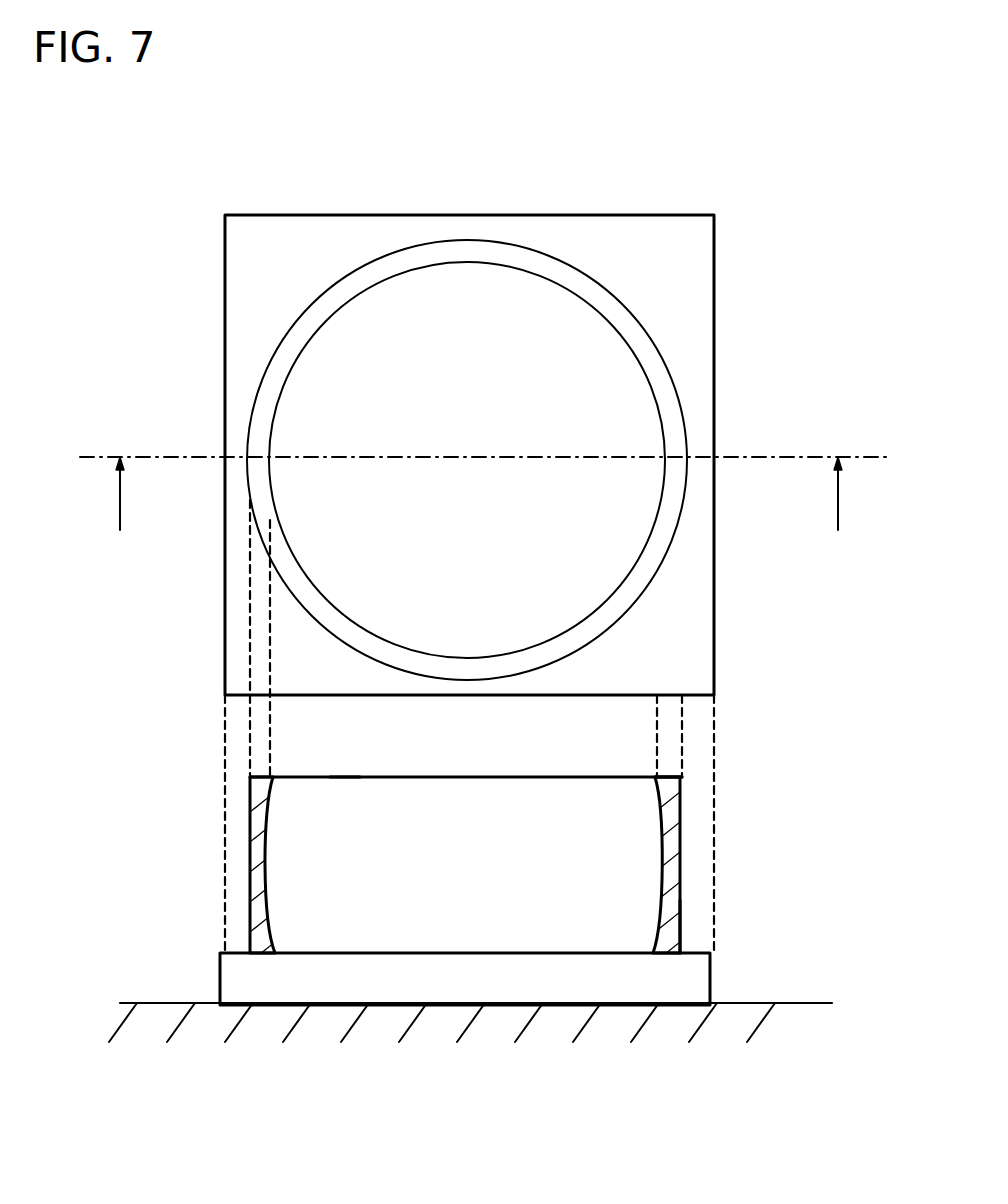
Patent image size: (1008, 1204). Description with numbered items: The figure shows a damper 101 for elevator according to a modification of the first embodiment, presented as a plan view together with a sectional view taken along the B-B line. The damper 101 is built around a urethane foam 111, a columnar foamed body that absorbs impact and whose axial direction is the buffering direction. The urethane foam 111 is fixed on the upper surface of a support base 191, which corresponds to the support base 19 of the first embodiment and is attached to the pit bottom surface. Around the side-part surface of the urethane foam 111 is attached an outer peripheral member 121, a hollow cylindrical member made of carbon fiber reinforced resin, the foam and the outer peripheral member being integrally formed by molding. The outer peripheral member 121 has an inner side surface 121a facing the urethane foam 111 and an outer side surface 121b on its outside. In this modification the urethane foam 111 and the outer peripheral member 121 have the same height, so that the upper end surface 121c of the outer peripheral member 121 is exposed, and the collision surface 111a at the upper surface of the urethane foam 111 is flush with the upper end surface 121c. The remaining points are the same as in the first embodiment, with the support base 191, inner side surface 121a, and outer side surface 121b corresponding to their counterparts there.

The damper for elevator 101 is at (505, 134).
The support base 19 is at (252, 245).
The urethane foam 111 is at (687, 427).
The collision surface 111a is at (343, 777).
The outer peripheral member 121 is at (682, 802).
The inner side surface 121a is at (665, 868).
The outer side surface 121b is at (683, 917).
The upper end surface 121c is at (677, 775).
The support base 191 is at (247, 972).